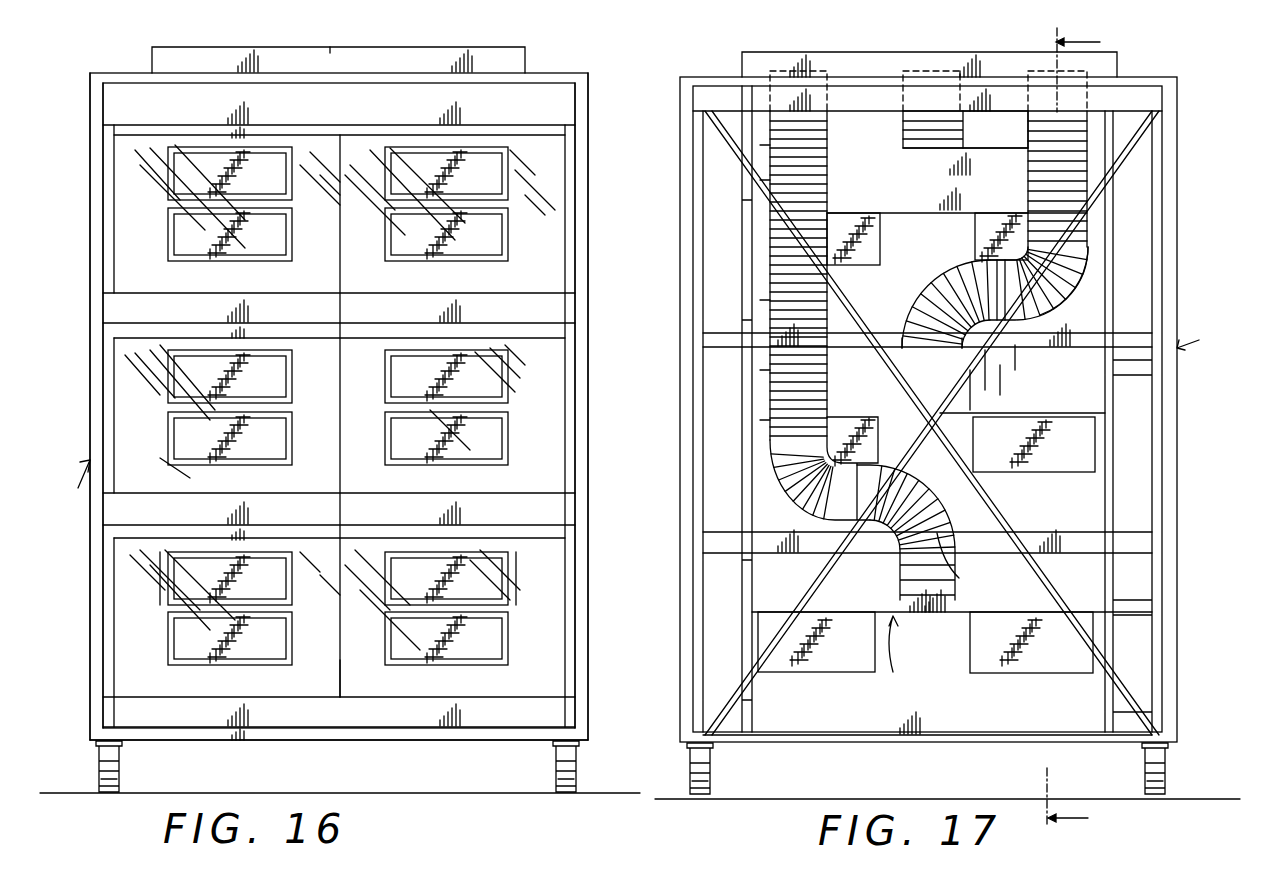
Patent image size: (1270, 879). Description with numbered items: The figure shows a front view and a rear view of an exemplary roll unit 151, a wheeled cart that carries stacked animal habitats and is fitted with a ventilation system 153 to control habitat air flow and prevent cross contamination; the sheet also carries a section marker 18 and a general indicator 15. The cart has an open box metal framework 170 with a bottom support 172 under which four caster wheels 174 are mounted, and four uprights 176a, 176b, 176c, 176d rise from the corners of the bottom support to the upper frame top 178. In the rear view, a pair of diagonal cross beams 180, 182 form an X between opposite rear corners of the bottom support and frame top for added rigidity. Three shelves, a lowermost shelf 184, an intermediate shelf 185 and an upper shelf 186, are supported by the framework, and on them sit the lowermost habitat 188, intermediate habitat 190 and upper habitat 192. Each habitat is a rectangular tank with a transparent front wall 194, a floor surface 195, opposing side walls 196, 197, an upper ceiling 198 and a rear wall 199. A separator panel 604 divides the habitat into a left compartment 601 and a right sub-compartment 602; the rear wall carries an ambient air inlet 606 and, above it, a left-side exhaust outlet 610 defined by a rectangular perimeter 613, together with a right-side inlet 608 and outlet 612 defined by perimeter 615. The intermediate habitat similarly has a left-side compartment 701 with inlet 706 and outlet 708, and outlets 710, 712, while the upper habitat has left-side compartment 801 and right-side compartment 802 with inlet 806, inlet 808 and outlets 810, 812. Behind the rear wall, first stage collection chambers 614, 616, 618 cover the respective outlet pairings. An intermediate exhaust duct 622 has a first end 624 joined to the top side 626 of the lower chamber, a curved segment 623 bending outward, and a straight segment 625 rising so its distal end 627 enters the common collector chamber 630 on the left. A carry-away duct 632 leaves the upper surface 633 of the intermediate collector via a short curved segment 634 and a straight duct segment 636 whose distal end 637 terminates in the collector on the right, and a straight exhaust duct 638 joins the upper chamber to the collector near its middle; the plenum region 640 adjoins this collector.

In FIG. 17, the cabinet assembly 15 is at (1213, 332).
In FIG. 17, the section line 18- 18 is at (1095, 432).
In FIG. 16, the roll unit 151 is at (66, 485).
In FIG. 17, the ventilation system 153 is at (889, 660).
In FIG. 16, the framework 170 is at (90, 368).
In FIG. 16, the bottom support 172 is at (304, 742).
In FIG. 16, the caster wheels 174 is at (96, 769).
In FIG. 16, the upright 176a is at (92, 232).
In FIG. 16, the upright 176b is at (588, 294).
In FIG. 17, the upright 176c is at (680, 400).
In FIG. 17, the upright 176d is at (1174, 276).
In FIG. 16, the upper frame top 178 is at (576, 73).
In FIG. 17, the upper frame top 178 is at (700, 78).
In FIG. 17, the diagonal cross beam 180 is at (816, 578).
In FIG. 17, the diagonal cross beam 182 is at (988, 507).
In FIG. 16, the lowermost shelf 184 is at (128, 708).
In FIG. 16, the intermediate shelf 185 is at (122, 516).
In FIG. 16, the upper shelf 186 is at (122, 310).
In FIG. 16, the lowermost habitat 188 is at (108, 622).
In FIG. 16, the intermediate habitat 190 is at (124, 401).
In FIG. 16, the upper habitat 192 is at (122, 197).
In FIG. 16, the front wall 194 is at (544, 683).
In FIG. 16, the floor surface 195 is at (275, 688).
In FIG. 16, the side wall 196 is at (112, 583).
In FIG. 16, the side wall 197 is at (568, 558).
In FIG. 16, the upper ceiling 198 is at (540, 530).
In FIG. 17, the rear wall 199 is at (925, 663).
In FIG. 16, the left compartment 601 is at (180, 682).
In FIG. 16, the right sub-compartment 602 is at (460, 684).
In FIG. 16, the separator panel 604 is at (342, 558).
In FIG. 16, the ambient air inlet 606 is at (274, 642).
In FIG. 16, the ambient air inlet 608 is at (468, 656).
In FIG. 16, the left-side exhaust outlet 610 is at (272, 568).
In FIG. 16, the exhaust outlet 612 is at (408, 560).
In FIG. 16, the rectangular perimeter 613 is at (182, 562).
In FIG. 17, the first stage air exhaust collection chamber 614 is at (924, 614).
In FIG. 16, the rectangular perimeter 615 is at (512, 558).
In FIG. 17, the first stage collector 616 is at (1088, 385).
In FIG. 17, the first stage collection chamber 618 is at (920, 213).
In FIG. 17, the intermediate exhaust duct 622 is at (958, 576).
In FIG. 17, the curved segment 623 is at (792, 490).
In FIG. 17, the first end 624 is at (906, 562).
In FIG. 17, the straight segment 625 is at (756, 314).
In FIG. 17, the top side 626 is at (1084, 548).
In FIG. 17, the distal end 627 is at (794, 66).
In FIG. 16, the common collector chamber 630 is at (325, 47).
In FIG. 17, the common collector chamber 630 is at (935, 67).
In FIG. 17, the carry-away duct 632 is at (928, 346).
In FIG. 17, the upper surface 633 is at (1058, 346).
In FIG. 17, the curved segment 634 is at (894, 306).
In FIG. 17, the straight duct segment 636 is at (1026, 186).
In FIG. 17, the distal end 637 is at (1050, 65).
In FIG. 17, the straight exhaust duct 638 is at (902, 132).
In FIG. 16, the top plenum 640 is at (414, 47).
In FIG. 17, the top plenum 640 is at (826, 52).
In FIG. 16, the left-side compartment 701 is at (126, 434).
In FIG. 16, the inlet 706 is at (250, 448).
In FIG. 16, the inlet 708 is at (430, 446).
In FIG. 16, the ventilation outlet 710 is at (264, 360).
In FIG. 16, the outlet 712 is at (488, 361).
In FIG. 16, the left-side compartment 801 is at (128, 164).
In FIG. 16, the right-side compartment 802 is at (548, 272).
In FIG. 16, the inlet 806 is at (200, 249).
In FIG. 16, the inlet 808 is at (478, 249).
In FIG. 16, the outlet 810 is at (276, 158).
In FIG. 16, the outlet 812 is at (416, 158).